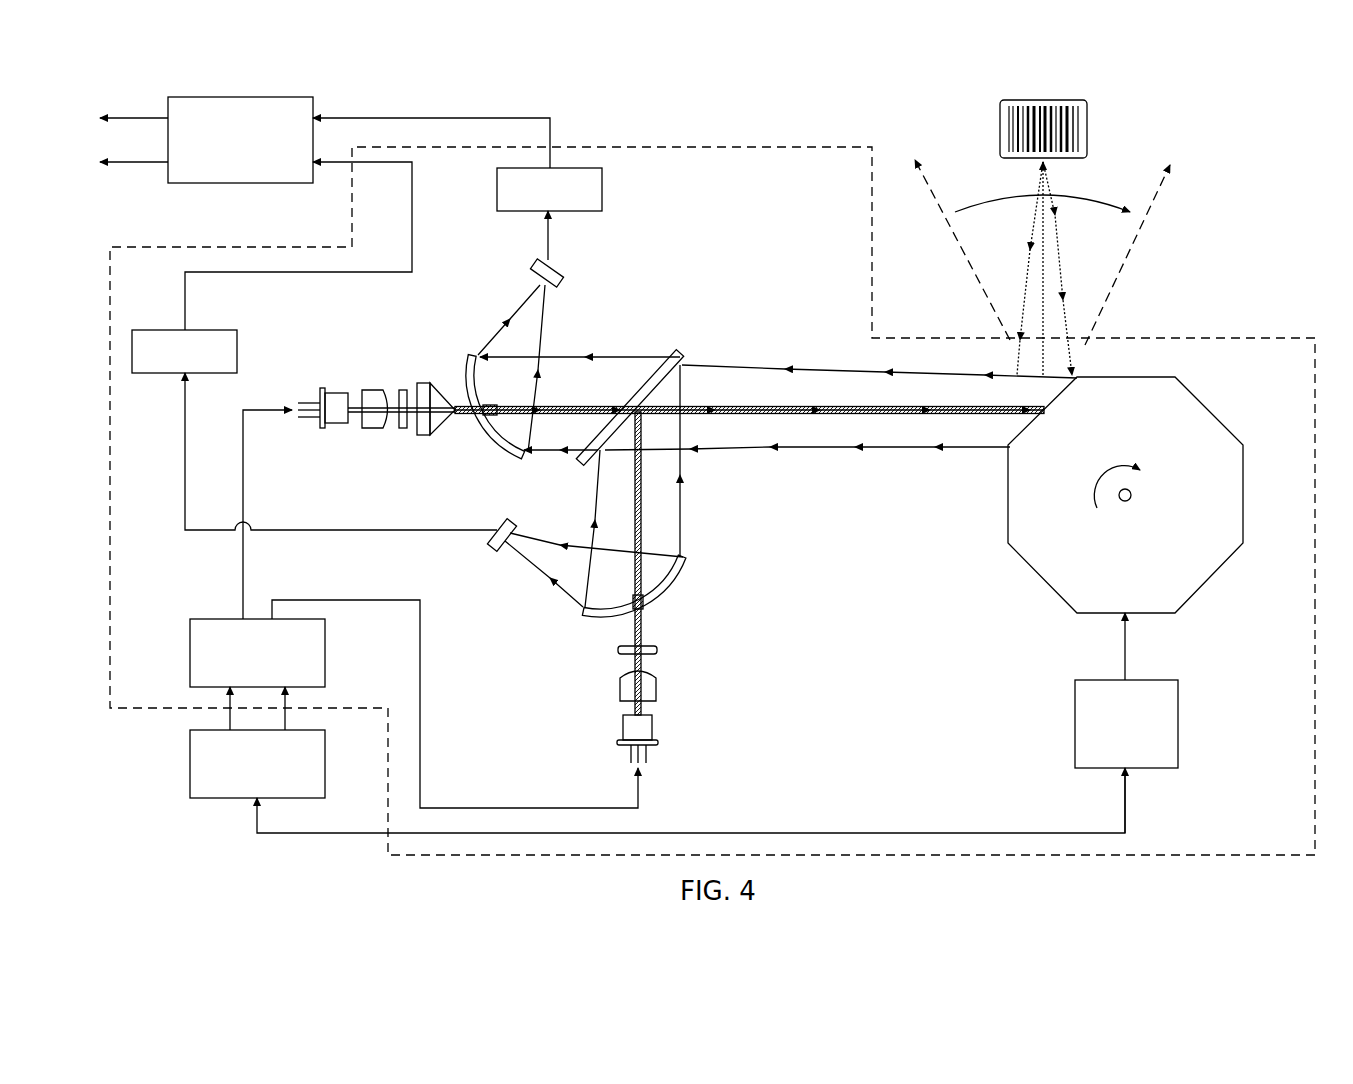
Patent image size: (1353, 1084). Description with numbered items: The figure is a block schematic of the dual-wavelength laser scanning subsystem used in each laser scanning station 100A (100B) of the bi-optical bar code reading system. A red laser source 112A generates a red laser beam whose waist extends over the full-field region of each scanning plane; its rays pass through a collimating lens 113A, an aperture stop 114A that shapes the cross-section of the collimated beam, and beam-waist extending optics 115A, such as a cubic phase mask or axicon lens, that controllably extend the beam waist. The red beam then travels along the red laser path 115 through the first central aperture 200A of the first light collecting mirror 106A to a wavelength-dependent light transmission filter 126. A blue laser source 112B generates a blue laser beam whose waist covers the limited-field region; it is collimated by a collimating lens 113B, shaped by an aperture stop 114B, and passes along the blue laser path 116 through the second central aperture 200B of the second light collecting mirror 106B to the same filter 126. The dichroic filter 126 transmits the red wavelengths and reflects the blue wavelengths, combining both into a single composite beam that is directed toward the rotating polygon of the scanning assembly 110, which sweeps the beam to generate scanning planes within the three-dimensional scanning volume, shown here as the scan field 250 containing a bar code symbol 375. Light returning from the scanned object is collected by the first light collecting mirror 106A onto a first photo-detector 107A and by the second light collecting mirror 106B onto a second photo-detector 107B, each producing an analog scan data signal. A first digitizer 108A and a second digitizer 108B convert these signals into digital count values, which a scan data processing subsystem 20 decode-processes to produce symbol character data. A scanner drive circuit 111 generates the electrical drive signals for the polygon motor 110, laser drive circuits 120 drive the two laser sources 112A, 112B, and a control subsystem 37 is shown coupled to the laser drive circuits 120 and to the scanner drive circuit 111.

The scan data processing subsystem 20 is at (240, 183).
The control subsystem 37 is at (327, 765).
The laser scanning station 100A is at (735, 147).
The laser scanning station 100B is at (712, 477).
The first light collecting mirror 106A is at (503, 447).
The second light collecting mirror 106B is at (678, 575).
The first photo-detector 107A is at (561, 270).
The second photo-detector 107B is at (493, 550).
The first digitizer 108A is at (604, 188).
The second digitizer 108B is at (155, 373).
The scanning assembly 110 is at (1243, 495).
The scanner drive circuit 111 is at (1180, 725).
The red laser source 112A is at (338, 393).
The blue laser source 112B is at (655, 725).
The collimating lens 113A is at (372, 430).
The collimating lens 113B is at (658, 690).
The aperture stop 114A is at (405, 390).
The aperture stop 114B is at (660, 649).
The beam-waist extending optics 115A is at (423, 437).
The red laser path 115 is at (572, 408).
The blue laser path 116 is at (810, 410).
The laser drive circuits 120 is at (327, 652).
The wavelength-dependent light transmission filter 126 is at (682, 350).
The first central aperture 200A is at (492, 420).
The second central aperture 200B is at (612, 615).
The scan field 250 is at (1125, 248).
The bar code symbol 375 is at (1087, 118).